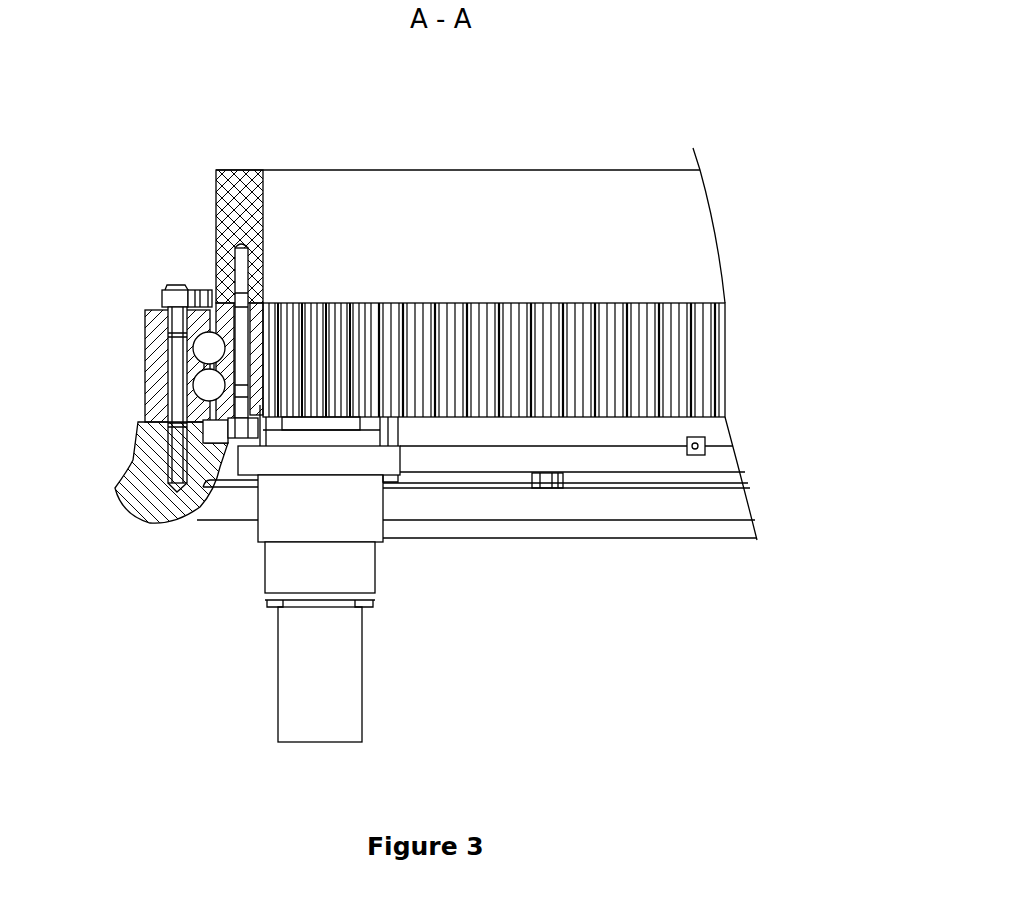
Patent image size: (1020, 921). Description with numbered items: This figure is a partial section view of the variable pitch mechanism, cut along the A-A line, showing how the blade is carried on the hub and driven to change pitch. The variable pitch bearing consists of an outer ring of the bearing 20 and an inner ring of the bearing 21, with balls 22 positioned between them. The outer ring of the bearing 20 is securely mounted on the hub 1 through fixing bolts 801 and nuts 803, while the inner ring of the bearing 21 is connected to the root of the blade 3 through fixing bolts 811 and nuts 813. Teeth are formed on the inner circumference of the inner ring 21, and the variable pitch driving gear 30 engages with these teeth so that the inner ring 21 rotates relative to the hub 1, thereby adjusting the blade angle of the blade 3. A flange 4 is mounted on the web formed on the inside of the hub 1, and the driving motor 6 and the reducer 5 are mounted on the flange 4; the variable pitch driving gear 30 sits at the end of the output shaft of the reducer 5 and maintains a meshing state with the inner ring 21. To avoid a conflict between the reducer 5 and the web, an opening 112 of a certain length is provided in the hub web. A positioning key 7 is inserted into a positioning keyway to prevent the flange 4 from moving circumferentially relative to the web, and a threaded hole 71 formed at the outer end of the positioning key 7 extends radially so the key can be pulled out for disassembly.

The hub 1 is at (152, 432).
The blade 3 is at (216, 190).
The flange 4 is at (266, 410).
The reducer 5 is at (370, 527).
The driving motor 6 is at (341, 686).
The positioning key 7 is at (705, 443).
The threaded hole 71 is at (705, 450).
The outer ring of the bearing 20 is at (152, 326).
The inner ring of the bearing 21 is at (213, 398).
The balls 22 is at (200, 354).
The variable pitch driving gear 30 is at (340, 337).
The opening 112 is at (213, 445).
The fixing bolts 801 is at (172, 288).
The nuts 803 is at (190, 300).
The fixing bolts 811 is at (217, 447).
The nuts 813 is at (215, 427).